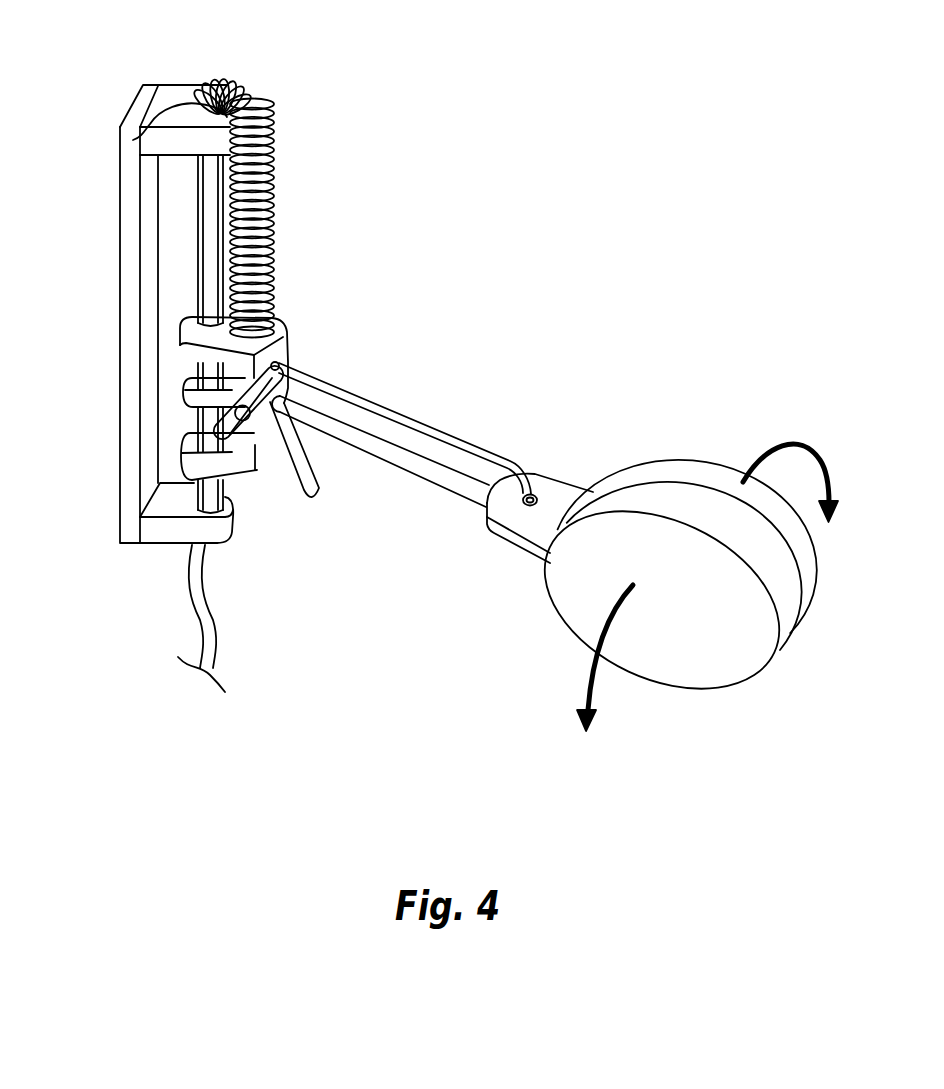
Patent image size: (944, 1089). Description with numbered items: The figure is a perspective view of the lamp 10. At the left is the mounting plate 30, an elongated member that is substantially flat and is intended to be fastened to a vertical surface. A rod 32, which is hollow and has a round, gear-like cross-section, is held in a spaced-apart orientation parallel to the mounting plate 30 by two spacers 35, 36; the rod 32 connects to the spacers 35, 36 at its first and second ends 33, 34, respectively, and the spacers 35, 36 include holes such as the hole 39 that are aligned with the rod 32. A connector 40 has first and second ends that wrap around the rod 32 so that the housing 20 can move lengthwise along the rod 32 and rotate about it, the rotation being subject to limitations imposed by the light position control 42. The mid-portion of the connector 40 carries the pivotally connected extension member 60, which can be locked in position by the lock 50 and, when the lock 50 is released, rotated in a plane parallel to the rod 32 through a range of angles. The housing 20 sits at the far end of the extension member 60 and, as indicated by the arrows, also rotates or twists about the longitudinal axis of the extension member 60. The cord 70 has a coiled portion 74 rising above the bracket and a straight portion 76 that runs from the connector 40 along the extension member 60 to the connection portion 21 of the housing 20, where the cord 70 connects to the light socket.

The lamp 10 is at (414, 191).
The housing 20 is at (707, 473).
The connection portion 21 is at (547, 483).
The mounting plate 30 is at (128, 265).
The rod 32 is at (212, 213).
The first end 33 is at (225, 543).
The second end 34 is at (212, 177).
The spacer 35 is at (167, 533).
The spacer 36 is at (168, 102).
The hole 39 is at (133, 140).
The connector 40 is at (218, 335).
The light position control 42 is at (312, 500).
The lock 50 is at (290, 367).
The extension member 60 is at (427, 467).
The cord 70 is at (210, 635).
The coiled portion 74 is at (262, 104).
The straight portion 76 is at (427, 432).